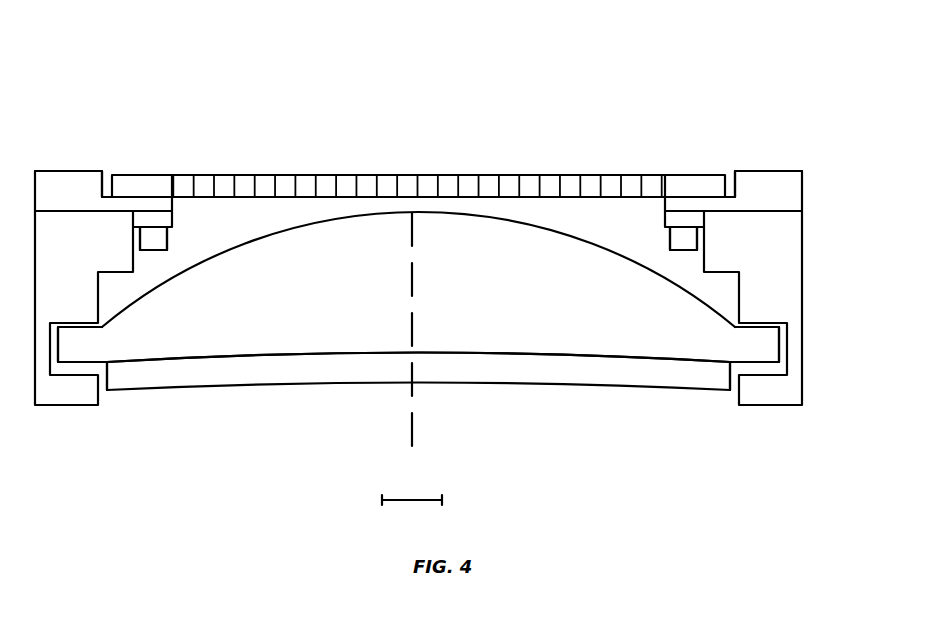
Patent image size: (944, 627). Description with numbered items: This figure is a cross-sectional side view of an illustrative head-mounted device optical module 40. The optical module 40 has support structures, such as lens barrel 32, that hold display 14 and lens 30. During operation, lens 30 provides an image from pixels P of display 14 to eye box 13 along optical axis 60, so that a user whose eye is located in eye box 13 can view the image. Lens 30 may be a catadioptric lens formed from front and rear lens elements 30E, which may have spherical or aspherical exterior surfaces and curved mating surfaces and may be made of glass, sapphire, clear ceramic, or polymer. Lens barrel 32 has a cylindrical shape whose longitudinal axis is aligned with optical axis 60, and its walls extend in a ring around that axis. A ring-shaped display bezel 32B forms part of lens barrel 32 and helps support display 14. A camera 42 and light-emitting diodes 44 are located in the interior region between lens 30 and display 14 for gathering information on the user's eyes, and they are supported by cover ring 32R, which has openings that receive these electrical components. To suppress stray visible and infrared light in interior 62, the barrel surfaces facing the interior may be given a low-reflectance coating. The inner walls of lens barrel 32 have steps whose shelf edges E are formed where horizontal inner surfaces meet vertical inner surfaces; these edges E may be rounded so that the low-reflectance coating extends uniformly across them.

The optical module 40 is at (787, 87).
The lens barrel 32 is at (812, 172).
The display bezel 32B is at (70, 182).
The cover ring 32R is at (153, 218).
The display 14 is at (443, 167).
The pixels P is at (350, 185).
The light-emitting diodes 44 is at (167, 240).
The camera 42 is at (668, 240).
The interior 62 is at (530, 217).
The lens 30 is at (533, 402).
The lens elements 30E is at (298, 342).
The step edges E is at (133, 273).
The optical axis 60 is at (412, 430).
The eye box 13 is at (442, 498).